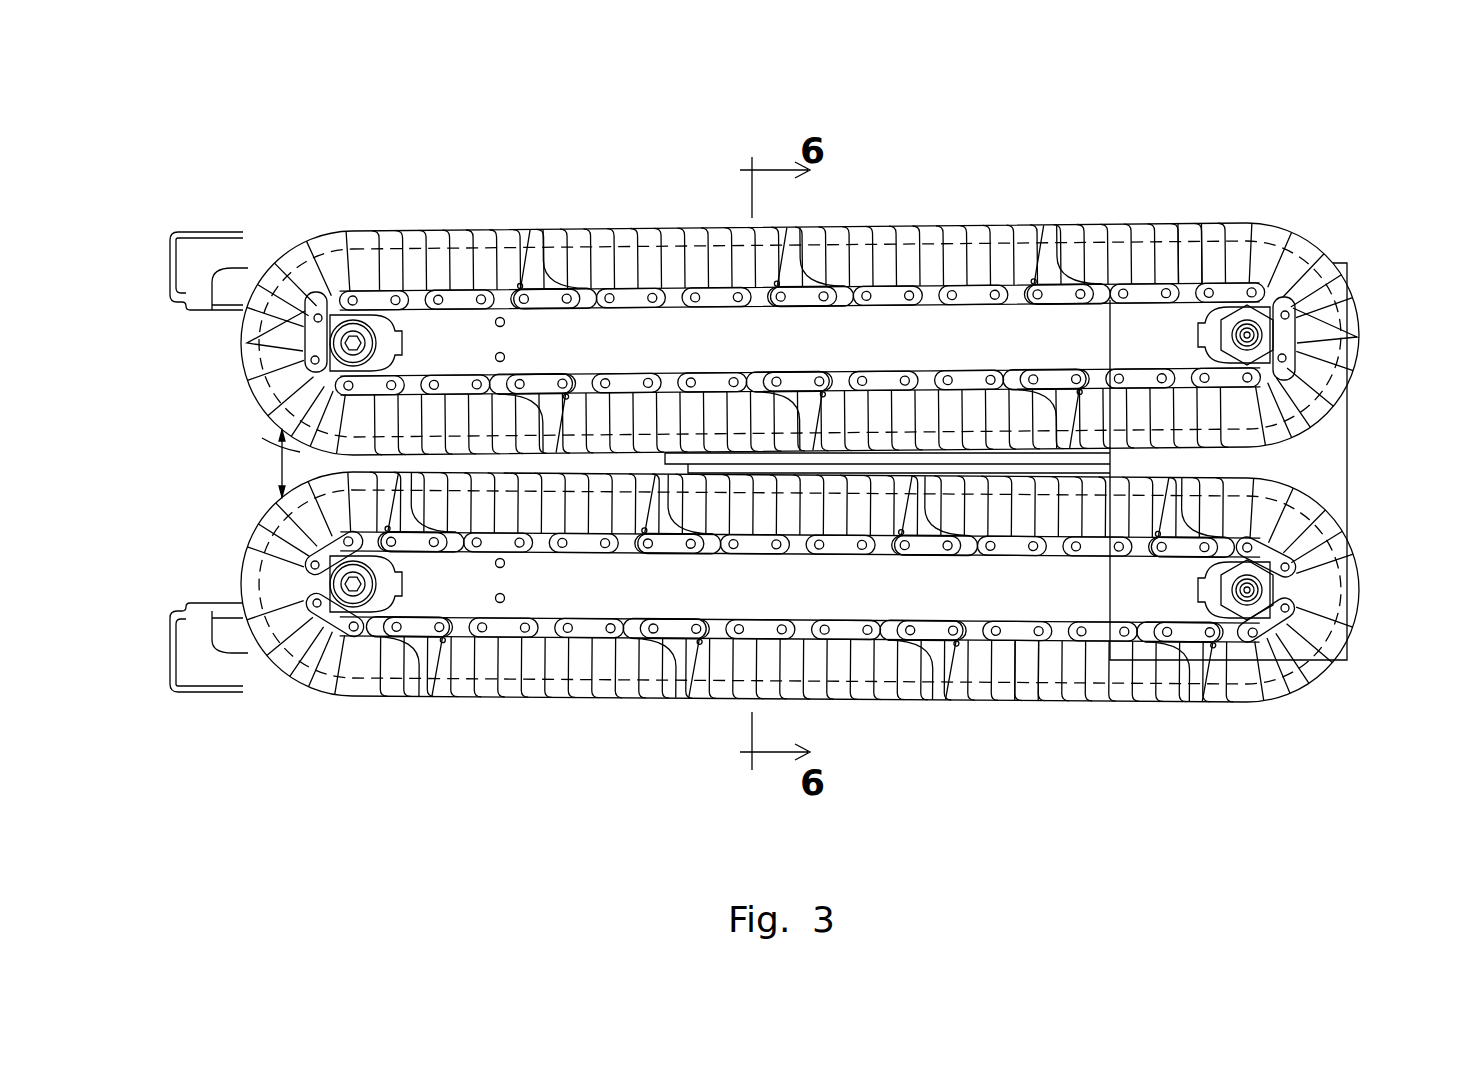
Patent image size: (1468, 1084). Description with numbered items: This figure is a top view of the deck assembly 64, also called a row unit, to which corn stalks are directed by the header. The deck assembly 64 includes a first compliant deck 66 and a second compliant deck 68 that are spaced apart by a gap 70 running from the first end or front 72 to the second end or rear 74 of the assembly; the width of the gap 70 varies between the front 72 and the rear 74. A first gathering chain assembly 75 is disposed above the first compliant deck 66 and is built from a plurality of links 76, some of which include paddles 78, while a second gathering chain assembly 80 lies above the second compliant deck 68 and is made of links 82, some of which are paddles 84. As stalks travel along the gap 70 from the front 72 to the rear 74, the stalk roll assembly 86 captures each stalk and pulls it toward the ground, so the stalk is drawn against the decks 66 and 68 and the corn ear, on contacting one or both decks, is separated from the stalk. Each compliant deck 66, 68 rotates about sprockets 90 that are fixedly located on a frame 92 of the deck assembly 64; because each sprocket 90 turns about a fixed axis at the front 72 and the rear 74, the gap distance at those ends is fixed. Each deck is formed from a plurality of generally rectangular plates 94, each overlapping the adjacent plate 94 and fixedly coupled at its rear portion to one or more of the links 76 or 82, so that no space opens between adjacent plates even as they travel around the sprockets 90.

The deck assembly 64 is at (1090, 178).
The first compliant deck 66 is at (226, 364).
The second compliant deck 68 is at (364, 712).
The gap 70 is at (280, 470).
The first end or front 72 is at (246, 453).
The second end or rear 74 is at (1327, 474).
The first gathering chain assembly 75 is at (1187, 260).
The links 76 is at (458, 295).
The paddles 78 is at (522, 285).
The second gathering chain assembly 80 is at (1025, 655).
The links 82 is at (590, 630).
The paddles 84 is at (652, 650).
The stalk roll assembly 86 is at (548, 462).
The sprockets 90 is at (355, 335).
The frame 92 is at (222, 257).
The plates 94 is at (1322, 248).